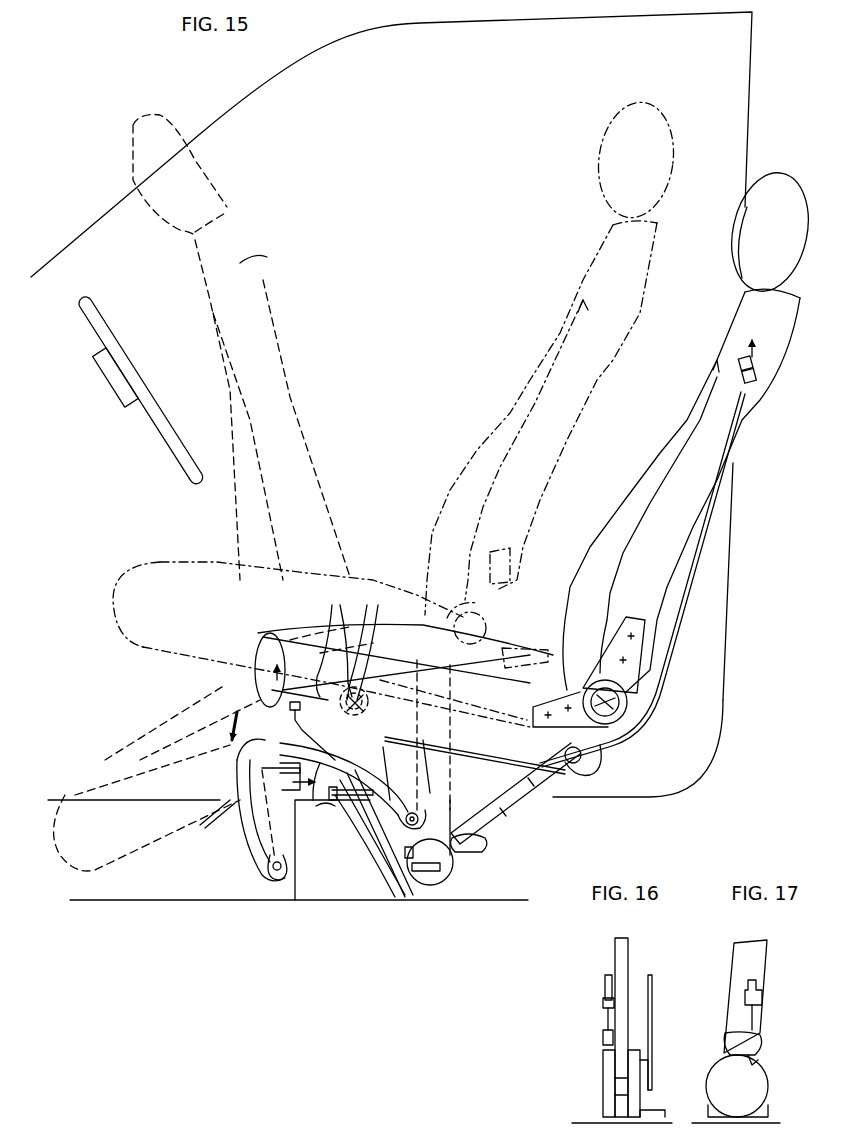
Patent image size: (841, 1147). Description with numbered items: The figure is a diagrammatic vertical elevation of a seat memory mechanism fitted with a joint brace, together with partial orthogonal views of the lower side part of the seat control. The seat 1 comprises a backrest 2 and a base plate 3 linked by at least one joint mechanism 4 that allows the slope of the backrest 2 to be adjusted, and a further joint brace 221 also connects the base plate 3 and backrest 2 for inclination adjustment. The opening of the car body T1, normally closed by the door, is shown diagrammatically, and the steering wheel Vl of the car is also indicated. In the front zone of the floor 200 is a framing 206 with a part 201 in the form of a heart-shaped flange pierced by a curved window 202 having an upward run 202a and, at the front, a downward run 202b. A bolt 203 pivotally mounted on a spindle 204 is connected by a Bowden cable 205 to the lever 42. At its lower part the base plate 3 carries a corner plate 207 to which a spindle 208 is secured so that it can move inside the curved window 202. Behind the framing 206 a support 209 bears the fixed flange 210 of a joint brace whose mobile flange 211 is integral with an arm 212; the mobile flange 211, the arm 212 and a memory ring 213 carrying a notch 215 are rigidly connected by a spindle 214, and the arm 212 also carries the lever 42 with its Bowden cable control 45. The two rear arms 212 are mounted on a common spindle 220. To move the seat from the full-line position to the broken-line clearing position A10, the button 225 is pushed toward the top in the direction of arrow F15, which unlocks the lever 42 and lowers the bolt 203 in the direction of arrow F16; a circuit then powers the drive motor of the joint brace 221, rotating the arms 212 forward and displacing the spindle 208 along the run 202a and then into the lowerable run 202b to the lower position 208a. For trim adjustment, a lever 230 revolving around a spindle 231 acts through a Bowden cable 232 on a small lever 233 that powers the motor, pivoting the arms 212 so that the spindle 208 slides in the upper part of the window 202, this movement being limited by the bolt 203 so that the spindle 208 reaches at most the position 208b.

In FIG. 15, the seat 1 is at (553, 655).
In FIG. 15, the backrest 2 is at (245, 400).
In FIG. 15, the base plate 3 is at (200, 575).
In FIG. 15, the joint mechanism 4 is at (633, 618).
In FIG. 15, the lever 42 is at (480, 845).
In FIG. 16, the lever 42 is at (606, 1012).
In FIG. 17, the lever 42 is at (740, 1037).
In FIG. 15, the Bowden cable control 45 is at (670, 640).
In FIG. 16, the Bowden cable control 45 is at (606, 978).
In FIG. 17, the Bowden cable control 45 is at (763, 987).
In FIG. 15, the floor 200 is at (205, 905).
In FIG. 15, the part 201 is at (250, 750).
In FIG. 15, the curved window 202 is at (330, 800).
In FIG. 15, the upward run 202a is at (371, 689).
In FIG. 15, the downward run 202b is at (257, 857).
In FIG. 15, the bolt 203 is at (265, 776).
In FIG. 15, the spindle 204 is at (328, 818).
In FIG. 15, the Bowden cable 205 is at (395, 895).
In FIG. 15, the framing 206 is at (305, 897).
In FIG. 15, the corner plate 207 is at (390, 736).
In FIG. 15, the spindle 208 is at (420, 812).
In FIG. 15, the lower position 208a is at (277, 872).
In FIG. 15, the position 208b is at (275, 722).
In FIG. 16, the support 209 is at (655, 1112).
In FIG. 16, the fixed flange 210 is at (645, 1095).
In FIG. 16, the mobile flange 211 is at (640, 1058).
In FIG. 15, the arm 212 is at (530, 810).
In FIG. 16, the arm 212 is at (622, 963).
In FIG. 17, the arm 212 is at (757, 958).
In FIG. 16, the memory ring 213 is at (604, 1064).
In FIG. 17, the memory ring 213 is at (757, 1082).
In FIG. 16, the spindle 214 is at (618, 1082).
In FIG. 16, the notch 215 is at (605, 1045).
In FIG. 17, the notch 215 is at (752, 1058).
In FIG. 15, the common spindle 220 is at (606, 752).
In FIG. 15, the joint brace 221 is at (612, 687).
In FIG. 15, the button 225 is at (758, 372).
In FIG. 15, the lever 230 is at (255, 657).
In FIG. 15, the spindle 231 is at (332, 638).
In FIG. 15, the Bowden cable 232 is at (372, 850).
In FIG. 15, the small lever 233 is at (430, 885).
In FIG. 15, the full clearing position A10 is at (274, 255).
In FIG. 15, the steering wheel Vl is at (147, 400).
In FIG. 15, the arrow F15 is at (759, 335).
In FIG. 15, the arrow F16 is at (228, 712).
In FIG. 15, the opening of the car body T1 is at (730, 555).